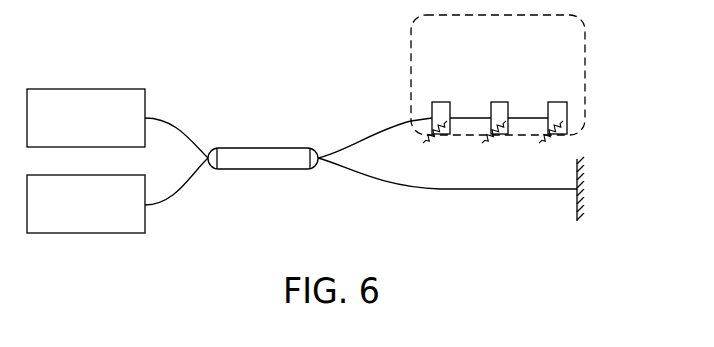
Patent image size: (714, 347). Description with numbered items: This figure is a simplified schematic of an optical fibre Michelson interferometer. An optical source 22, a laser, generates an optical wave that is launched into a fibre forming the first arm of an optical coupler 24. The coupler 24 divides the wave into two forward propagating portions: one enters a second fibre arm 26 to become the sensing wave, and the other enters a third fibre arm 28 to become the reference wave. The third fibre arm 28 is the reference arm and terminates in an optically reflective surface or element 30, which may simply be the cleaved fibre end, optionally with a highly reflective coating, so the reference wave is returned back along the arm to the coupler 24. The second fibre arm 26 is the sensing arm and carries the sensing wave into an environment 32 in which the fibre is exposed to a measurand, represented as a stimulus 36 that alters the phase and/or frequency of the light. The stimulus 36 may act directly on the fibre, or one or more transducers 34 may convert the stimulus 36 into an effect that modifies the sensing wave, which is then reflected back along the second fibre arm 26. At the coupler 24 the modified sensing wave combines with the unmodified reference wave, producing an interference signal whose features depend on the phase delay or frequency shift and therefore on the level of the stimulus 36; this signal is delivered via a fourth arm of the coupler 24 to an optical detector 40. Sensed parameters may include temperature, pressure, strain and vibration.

The optical source 22 is at (103, 128).
The optical detector 40 is at (103, 216).
The optical coupler 24 is at (255, 170).
The second fibre arm 26 is at (373, 133).
The third fibre arm 28 is at (352, 173).
The environment 32 is at (517, 75).
The transducers 34 is at (567, 110).
The stimulus 36 is at (547, 138).
The optically reflective surface or element 30 is at (584, 205).